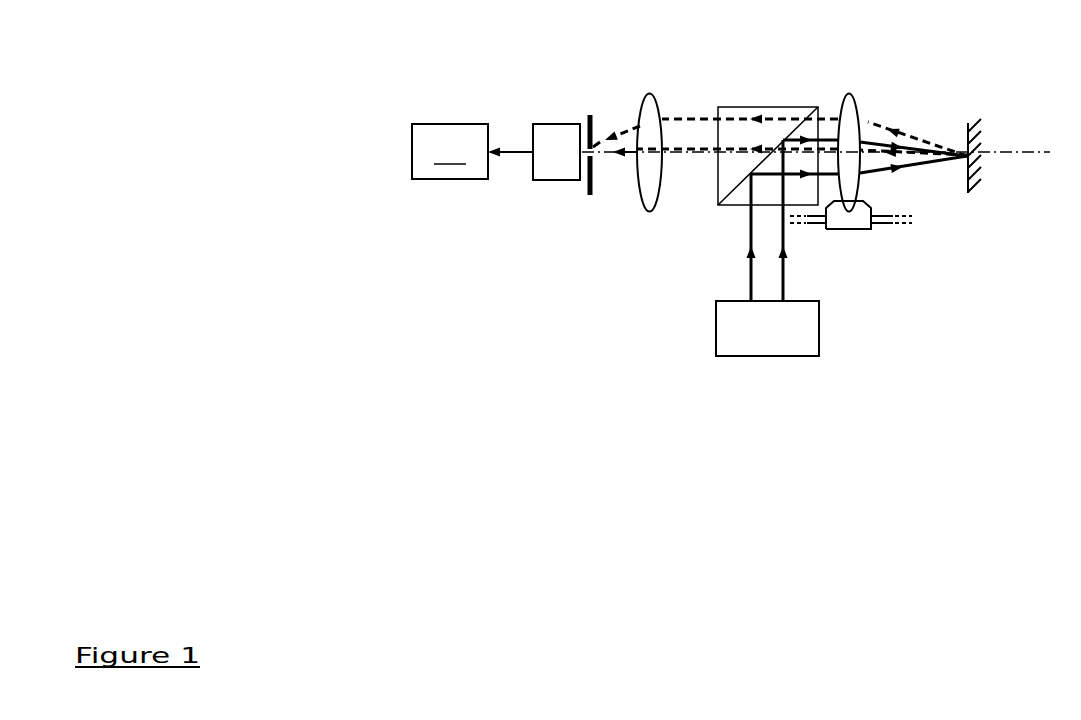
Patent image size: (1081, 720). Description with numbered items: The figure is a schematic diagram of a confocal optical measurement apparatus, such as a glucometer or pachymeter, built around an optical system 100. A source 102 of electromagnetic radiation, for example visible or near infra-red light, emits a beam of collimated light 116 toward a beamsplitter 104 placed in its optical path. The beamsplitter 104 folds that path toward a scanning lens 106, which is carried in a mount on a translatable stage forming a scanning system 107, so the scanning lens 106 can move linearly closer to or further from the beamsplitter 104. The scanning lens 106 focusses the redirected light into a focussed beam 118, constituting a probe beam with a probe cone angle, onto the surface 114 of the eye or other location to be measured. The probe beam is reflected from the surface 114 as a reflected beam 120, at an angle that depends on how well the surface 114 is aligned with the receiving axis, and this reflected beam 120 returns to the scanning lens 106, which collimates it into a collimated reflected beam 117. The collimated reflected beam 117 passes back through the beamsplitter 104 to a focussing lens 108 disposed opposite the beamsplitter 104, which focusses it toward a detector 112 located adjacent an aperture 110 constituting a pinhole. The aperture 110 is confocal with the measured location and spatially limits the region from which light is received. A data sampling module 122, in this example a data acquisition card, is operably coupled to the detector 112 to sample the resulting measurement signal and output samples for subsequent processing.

The optical system 100 is at (460, 409).
The source 102 is at (740, 370).
The beamsplitter 104 is at (711, 217).
The scanning lens 106 is at (862, 79).
The scanning system 107 is at (848, 230).
The focussing lens 108 is at (656, 78).
The aperture 110 is at (580, 200).
The detector 112 is at (547, 104).
The surface 114 is at (982, 215).
The beam of collimated light 116 is at (784, 288).
The collimated reflected beam 117 is at (695, 117).
The focussed beam 118 is at (913, 167).
The reflected beam 120 is at (880, 127).
The data sampling module 122 is at (472, 151).